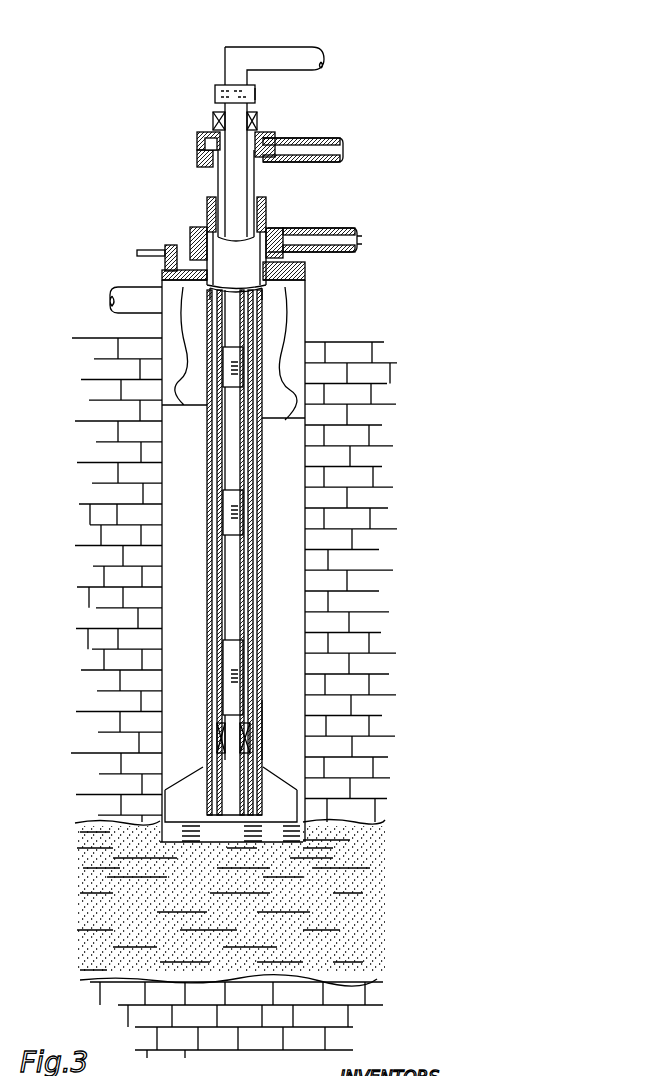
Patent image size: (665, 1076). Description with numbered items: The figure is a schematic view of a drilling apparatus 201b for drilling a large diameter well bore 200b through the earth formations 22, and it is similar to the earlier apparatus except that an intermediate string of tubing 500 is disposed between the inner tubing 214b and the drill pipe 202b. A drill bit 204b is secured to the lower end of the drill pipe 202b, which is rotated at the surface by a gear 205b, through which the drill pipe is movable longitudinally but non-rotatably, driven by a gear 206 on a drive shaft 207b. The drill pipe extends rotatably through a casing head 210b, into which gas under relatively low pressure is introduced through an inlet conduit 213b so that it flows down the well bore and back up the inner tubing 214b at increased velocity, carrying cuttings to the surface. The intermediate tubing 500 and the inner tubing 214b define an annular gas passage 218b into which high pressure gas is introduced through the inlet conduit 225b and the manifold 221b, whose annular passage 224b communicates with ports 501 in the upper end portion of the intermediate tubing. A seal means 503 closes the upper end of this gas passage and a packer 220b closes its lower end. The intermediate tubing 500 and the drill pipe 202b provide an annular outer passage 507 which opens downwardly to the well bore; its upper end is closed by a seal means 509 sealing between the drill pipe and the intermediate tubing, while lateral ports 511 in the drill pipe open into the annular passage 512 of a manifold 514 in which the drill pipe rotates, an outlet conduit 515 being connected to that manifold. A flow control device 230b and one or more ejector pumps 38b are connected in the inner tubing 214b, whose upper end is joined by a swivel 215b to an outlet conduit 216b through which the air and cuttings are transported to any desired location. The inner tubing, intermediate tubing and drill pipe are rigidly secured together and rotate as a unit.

The outlet conduit 216b is at (304, 53).
The swivel 215b is at (258, 97).
The seal means 503 is at (213, 118).
The manifold 221b is at (215, 128).
The ports 501 is at (205, 150).
The annular passage 224b is at (270, 138).
The inlet conduit 225b is at (330, 136).
The annular gas passage 218b is at (216, 182).
The intermediate string of tubing 500 is at (255, 187).
The seal means 509 is at (263, 203).
The lateral ports 511 is at (206, 218).
The gear 206 is at (200, 234).
The manifold 514 is at (272, 230).
The annular passage 512 is at (270, 243).
The outlet conduit 515 is at (330, 232).
The gear 205b is at (305, 272).
The casing head 210b is at (310, 298).
The drilling apparatus 201b is at (150, 232).
The drive shaft 207b is at (152, 252).
The inlet conduit 213b is at (142, 270).
The ejector pump 38b is at (240, 356).
The well bore 200b is at (312, 354).
The inner tubing 214b is at (244, 445).
The annular outer passage 507 is at (211, 553).
The drill pipe 202b is at (262, 621).
The flow control device 230b is at (249, 655).
The packer 220b is at (262, 722).
The drill bit 204b is at (178, 788).
The ground 22 is at (355, 908).